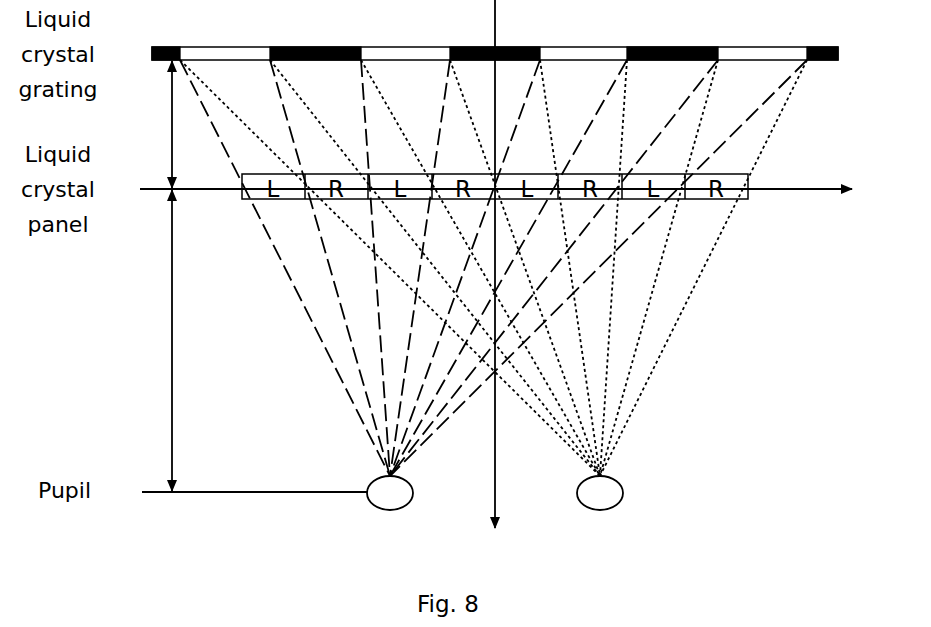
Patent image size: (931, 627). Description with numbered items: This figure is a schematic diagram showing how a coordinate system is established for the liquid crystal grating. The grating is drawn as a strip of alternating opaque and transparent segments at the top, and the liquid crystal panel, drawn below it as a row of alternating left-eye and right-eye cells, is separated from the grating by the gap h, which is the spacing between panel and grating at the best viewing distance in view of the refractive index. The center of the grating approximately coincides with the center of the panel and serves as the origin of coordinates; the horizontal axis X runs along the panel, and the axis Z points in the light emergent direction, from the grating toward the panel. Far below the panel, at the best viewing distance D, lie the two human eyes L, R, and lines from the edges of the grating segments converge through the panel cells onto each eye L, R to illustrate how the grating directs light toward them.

The gap between the liquid crystal panel and the liquid crystal grating h is at (159, 124).
The best viewing distance D is at (158, 340).
The left pupil L is at (380, 514).
The right pupil R is at (600, 514).
The X-axis X is at (508, 190).
The Z-axis Z is at (494, 281).